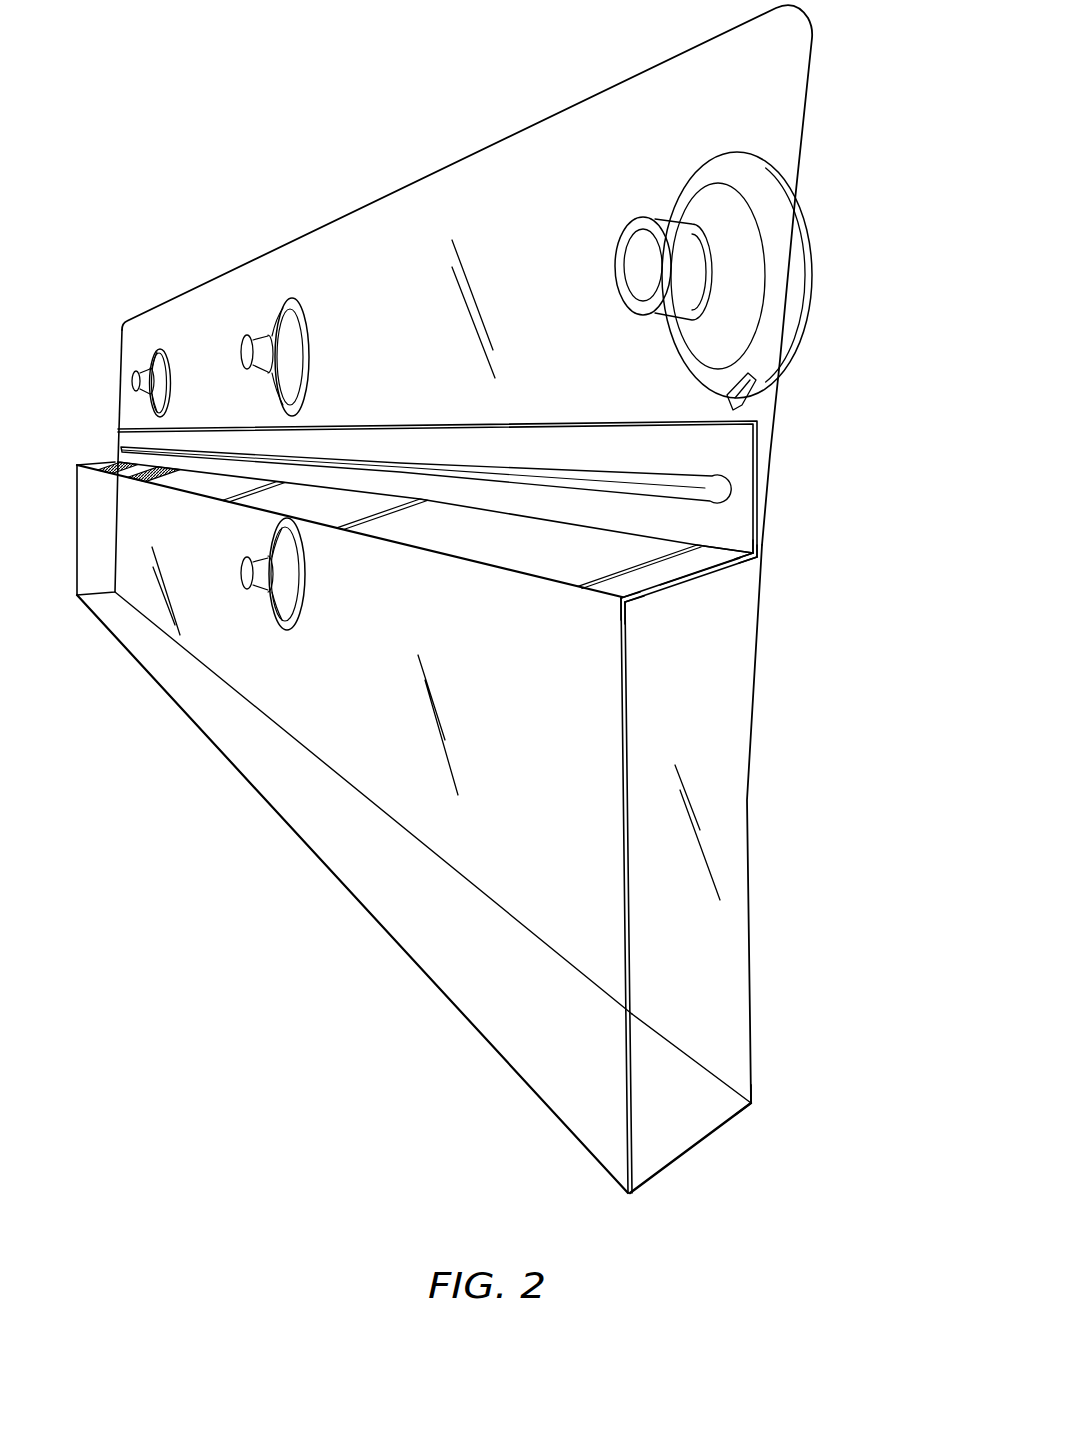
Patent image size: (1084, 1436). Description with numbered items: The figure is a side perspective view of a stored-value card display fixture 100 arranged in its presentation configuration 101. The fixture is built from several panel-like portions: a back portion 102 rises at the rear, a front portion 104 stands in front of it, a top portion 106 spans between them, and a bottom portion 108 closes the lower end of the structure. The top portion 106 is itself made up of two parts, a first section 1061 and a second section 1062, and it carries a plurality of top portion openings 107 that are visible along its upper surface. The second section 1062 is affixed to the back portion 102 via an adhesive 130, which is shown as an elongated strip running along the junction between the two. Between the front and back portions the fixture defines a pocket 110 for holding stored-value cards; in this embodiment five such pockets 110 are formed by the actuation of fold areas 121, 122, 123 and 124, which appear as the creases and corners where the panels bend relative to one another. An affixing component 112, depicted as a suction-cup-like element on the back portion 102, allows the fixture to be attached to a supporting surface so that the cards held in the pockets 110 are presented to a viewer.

The stored-value card display fixture 100 is at (170, 56).
The presentation configuration 101 is at (290, 464).
The back portion 102 is at (425, 222).
The front portion 104 is at (235, 652).
The top portion 106 is at (703, 577).
The top portion openings 107 is at (545, 553).
The bottom portion 108 is at (677, 1130).
The pocket 110 is at (463, 535).
The affixing component 112 is at (808, 240).
The fold area 121 is at (402, 948).
The fold area 122 is at (753, 1102).
The fold area 123 is at (658, 593).
The fold area 124 is at (757, 557).
The adhesive 130 is at (723, 488).
The first section 1061 is at (677, 572).
The second section 1062 is at (758, 468).